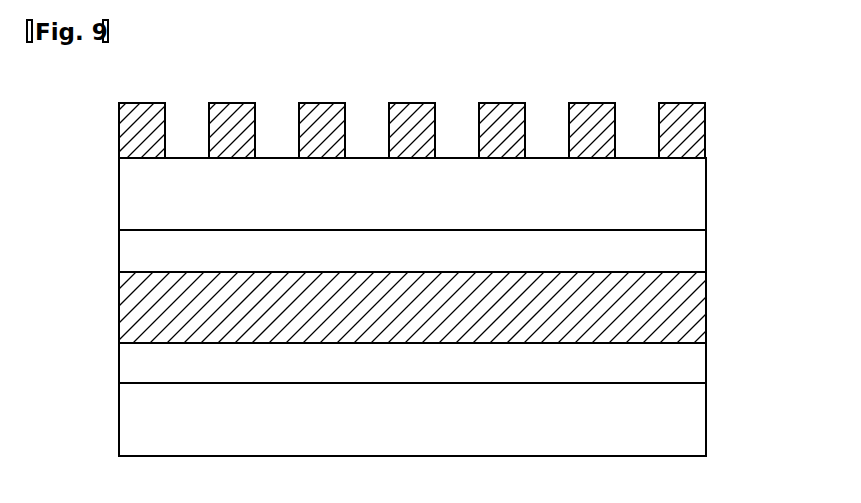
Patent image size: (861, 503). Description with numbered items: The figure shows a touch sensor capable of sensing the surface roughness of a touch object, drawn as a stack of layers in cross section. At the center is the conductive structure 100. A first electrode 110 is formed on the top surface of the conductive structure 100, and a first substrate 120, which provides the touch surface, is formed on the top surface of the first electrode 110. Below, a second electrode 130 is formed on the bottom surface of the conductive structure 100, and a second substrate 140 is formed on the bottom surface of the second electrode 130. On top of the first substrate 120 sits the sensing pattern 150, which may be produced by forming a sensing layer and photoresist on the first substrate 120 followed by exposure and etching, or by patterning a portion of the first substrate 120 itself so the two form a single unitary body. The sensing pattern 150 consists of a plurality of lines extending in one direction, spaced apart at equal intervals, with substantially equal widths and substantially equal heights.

The conductive structure 100 is at (698, 312).
The first electrode 110 is at (698, 252).
The first substrate 120 is at (698, 196).
The second electrode 130 is at (698, 365).
The second substrate 140 is at (698, 421).
The sensing pattern 150 is at (697, 132).